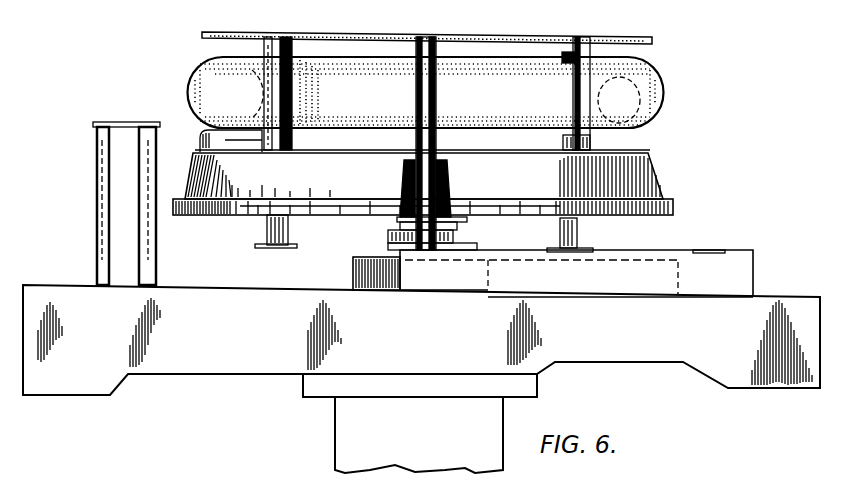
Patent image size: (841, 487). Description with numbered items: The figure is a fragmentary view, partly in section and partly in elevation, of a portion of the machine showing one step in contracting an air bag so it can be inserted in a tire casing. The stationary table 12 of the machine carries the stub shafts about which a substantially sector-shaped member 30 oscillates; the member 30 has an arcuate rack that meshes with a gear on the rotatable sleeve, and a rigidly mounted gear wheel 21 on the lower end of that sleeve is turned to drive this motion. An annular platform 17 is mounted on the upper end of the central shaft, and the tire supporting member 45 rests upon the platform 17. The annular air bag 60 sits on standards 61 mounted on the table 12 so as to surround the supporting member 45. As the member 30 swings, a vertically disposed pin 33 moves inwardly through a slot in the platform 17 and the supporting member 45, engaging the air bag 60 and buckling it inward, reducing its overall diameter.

The table 12 is at (218, 355).
The platform 17 is at (242, 205).
The gear wheel 21 is at (353, 273).
The sector-shaped member 30 is at (748, 263).
The pin 33 is at (437, 50).
The tire supporting member 45 is at (637, 37).
The air bag 60 is at (312, 62).
The standards 61 is at (127, 122).